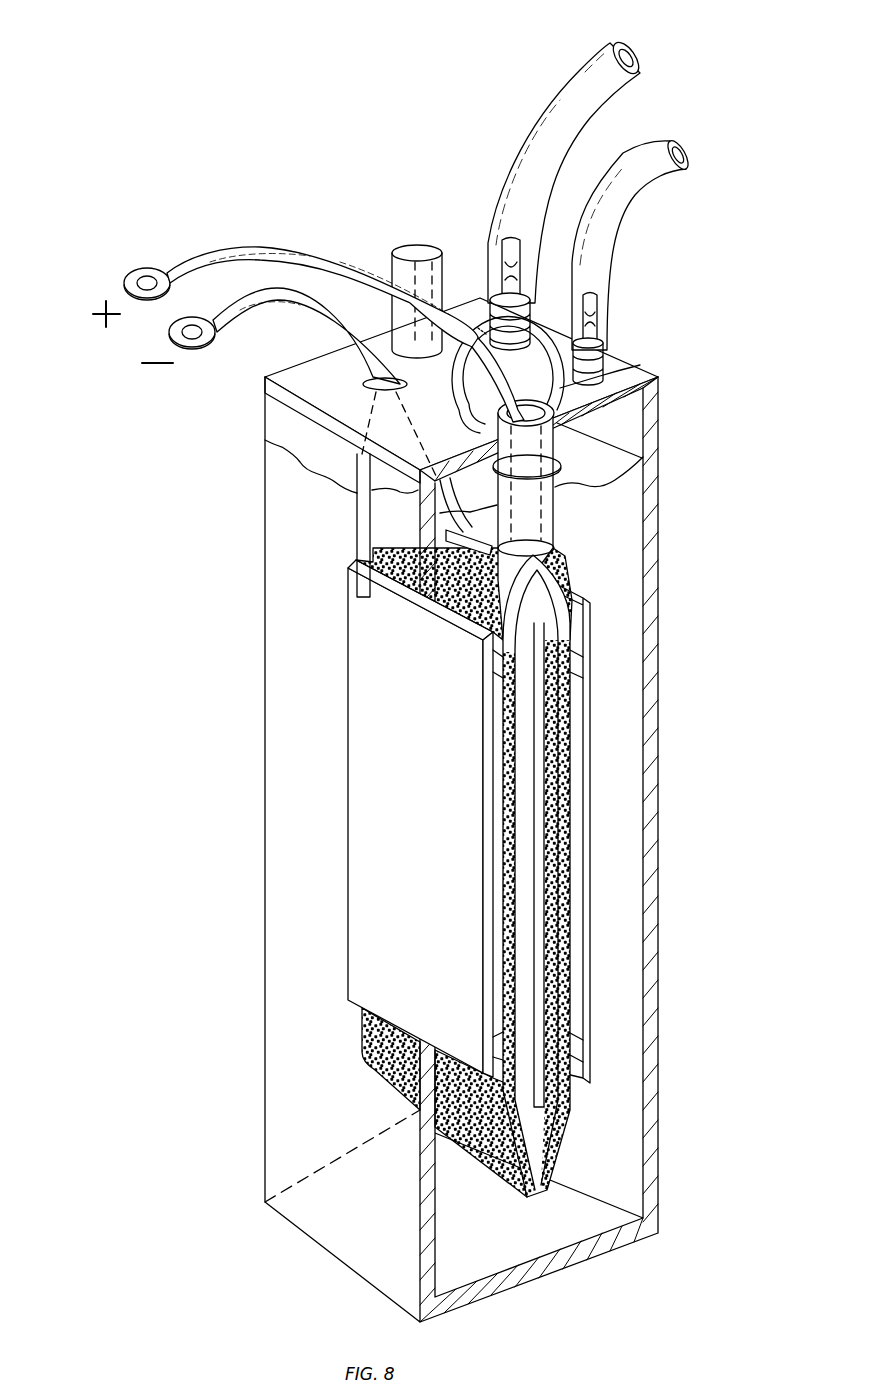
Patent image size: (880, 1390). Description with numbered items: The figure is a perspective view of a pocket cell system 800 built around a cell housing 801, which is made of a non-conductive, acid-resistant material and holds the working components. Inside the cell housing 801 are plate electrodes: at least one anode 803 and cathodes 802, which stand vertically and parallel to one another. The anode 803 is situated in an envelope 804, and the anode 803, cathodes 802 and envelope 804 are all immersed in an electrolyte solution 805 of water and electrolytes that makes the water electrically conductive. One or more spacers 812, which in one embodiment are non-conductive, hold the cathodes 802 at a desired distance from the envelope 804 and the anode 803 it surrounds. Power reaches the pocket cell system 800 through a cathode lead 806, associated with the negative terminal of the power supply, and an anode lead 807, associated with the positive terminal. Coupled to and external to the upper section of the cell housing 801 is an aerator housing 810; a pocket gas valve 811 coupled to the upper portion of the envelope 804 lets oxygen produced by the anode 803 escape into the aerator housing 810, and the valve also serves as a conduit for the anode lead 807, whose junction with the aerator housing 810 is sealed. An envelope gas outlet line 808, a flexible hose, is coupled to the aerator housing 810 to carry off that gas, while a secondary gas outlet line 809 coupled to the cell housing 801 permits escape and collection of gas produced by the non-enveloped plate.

The pocket cell system 800 is at (108, 106).
The cell housing 801 is at (263, 997).
The cathode 802 is at (595, 840).
The anode 803 is at (563, 1085).
The envelope 804 is at (560, 1143).
The electrolyte solution 805 is at (293, 458).
The cathode lead 806 is at (273, 300).
The anode lead 807 is at (222, 246).
The envelope gas outlet line 808 is at (633, 57).
The secondary gas outlet line 809 is at (687, 147).
The aerator housing 810 is at (637, 360).
The pocket gas valve 811 is at (553, 505).
The spacer 812 is at (575, 1045).